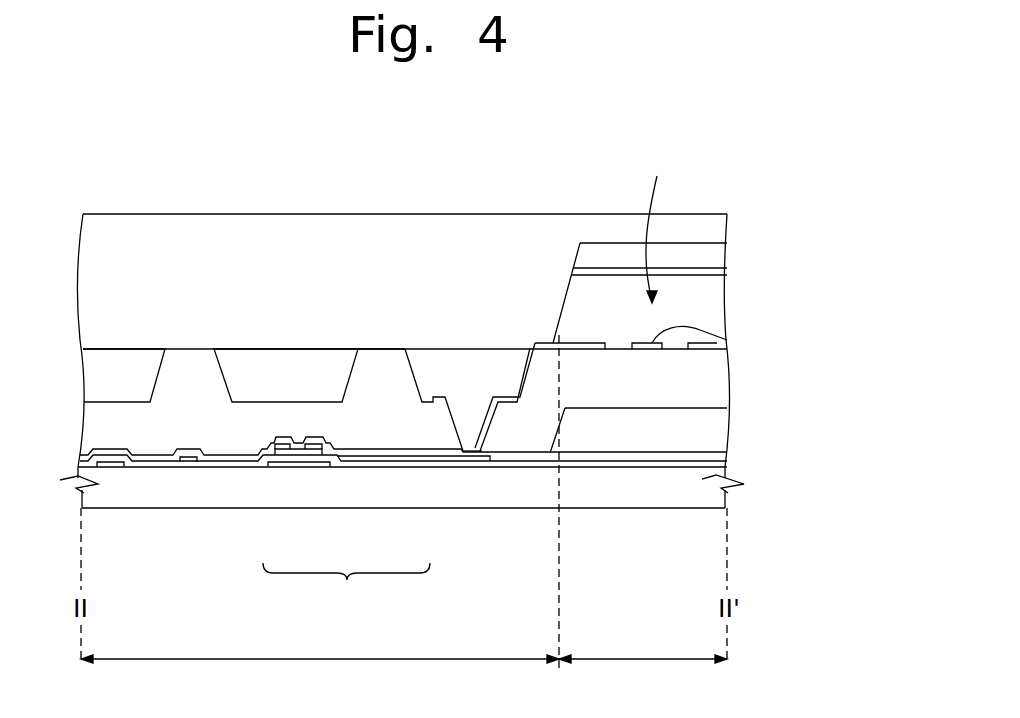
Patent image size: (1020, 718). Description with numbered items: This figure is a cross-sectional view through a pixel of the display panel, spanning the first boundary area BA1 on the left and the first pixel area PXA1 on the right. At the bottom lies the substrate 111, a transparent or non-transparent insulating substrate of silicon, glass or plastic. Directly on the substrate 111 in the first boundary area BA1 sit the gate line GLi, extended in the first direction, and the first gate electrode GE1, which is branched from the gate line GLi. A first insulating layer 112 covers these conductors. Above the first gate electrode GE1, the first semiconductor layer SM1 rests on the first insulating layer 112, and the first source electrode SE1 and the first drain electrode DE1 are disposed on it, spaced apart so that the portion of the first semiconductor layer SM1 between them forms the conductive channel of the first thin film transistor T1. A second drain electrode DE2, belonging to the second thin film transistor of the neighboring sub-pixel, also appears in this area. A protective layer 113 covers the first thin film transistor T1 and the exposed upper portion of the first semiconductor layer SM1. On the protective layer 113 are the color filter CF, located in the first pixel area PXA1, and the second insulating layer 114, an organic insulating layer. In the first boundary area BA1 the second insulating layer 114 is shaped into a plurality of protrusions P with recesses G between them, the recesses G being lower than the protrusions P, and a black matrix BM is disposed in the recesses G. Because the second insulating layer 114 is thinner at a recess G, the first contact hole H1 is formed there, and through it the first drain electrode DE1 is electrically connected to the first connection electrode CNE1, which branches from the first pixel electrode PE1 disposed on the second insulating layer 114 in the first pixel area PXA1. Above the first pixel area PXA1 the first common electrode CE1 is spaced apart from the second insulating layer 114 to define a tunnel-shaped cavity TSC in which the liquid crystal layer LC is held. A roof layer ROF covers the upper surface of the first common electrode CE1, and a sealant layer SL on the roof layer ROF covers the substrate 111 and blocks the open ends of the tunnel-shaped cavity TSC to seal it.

The sealant layer SL is at (720, 229).
The roof layer ROF is at (722, 256).
The first common electrode CE1 is at (720, 272).
The liquid crystal layer LC is at (718, 313).
The tunnel-shaped cavity TSC is at (651, 225).
The second insulating layer 114 is at (722, 380).
The first pixel electrode PE1 is at (725, 348).
The color filter CF is at (718, 432).
The recess G is at (300, 402).
The protrusion P is at (382, 347).
The black matrix BM is at (432, 357).
The first contact hole H1 is at (471, 426).
The first connection electrode CNE1 is at (515, 387).
The protective layer 113 is at (723, 456).
The first insulating layer 112 is at (723, 467).
The substrate 111 is at (718, 498).
The gate line GLi is at (110, 467).
The second drain electrode DE2 is at (188, 462).
The first gate electrode GE1 is at (317, 464).
The first semiconductor layer SM1 is at (294, 452).
The first source electrode SE1 is at (283, 449).
The first drain electrode DE1 is at (322, 450).
The first thin film transistor T1 is at (346, 584).
The first boundary area BA1 is at (320, 673).
The first pixel area PXA1 is at (643, 672).